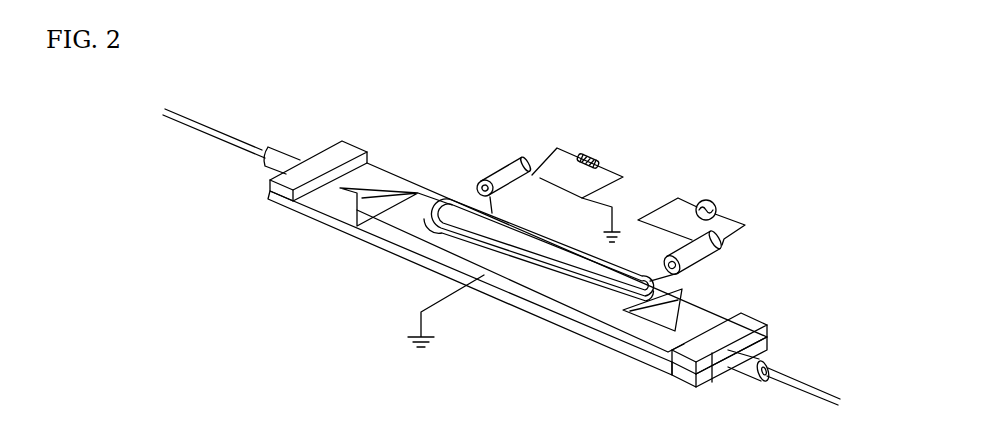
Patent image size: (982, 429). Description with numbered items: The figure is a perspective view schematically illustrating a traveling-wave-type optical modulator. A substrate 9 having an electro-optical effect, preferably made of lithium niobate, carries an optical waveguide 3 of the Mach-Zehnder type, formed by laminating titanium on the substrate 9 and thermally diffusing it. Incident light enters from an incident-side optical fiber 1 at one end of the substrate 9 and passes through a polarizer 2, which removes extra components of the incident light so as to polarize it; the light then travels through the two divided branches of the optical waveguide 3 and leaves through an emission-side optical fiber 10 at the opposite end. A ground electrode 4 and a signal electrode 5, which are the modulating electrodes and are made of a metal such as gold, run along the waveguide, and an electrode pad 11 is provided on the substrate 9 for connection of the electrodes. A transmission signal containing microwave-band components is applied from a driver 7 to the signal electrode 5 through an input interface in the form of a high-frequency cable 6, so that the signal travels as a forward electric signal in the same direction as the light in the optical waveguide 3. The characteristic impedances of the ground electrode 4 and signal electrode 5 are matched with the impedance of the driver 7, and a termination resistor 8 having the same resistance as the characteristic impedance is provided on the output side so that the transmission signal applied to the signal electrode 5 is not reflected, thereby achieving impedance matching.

The incident-side optical fiber 1 is at (792, 378).
The polarizer 2 is at (686, 377).
The optical waveguide 3 is at (692, 303).
The ground electrode 4 is at (542, 234).
The signal electrode 5 is at (445, 248).
The high-frequency cable 6 is at (503, 165).
The driver 7 is at (716, 204).
The termination resistor 8 is at (597, 156).
The substrate 9 is at (320, 206).
The emission-side optical fiber 10 is at (247, 140).
The electrode pad 11 is at (453, 198).